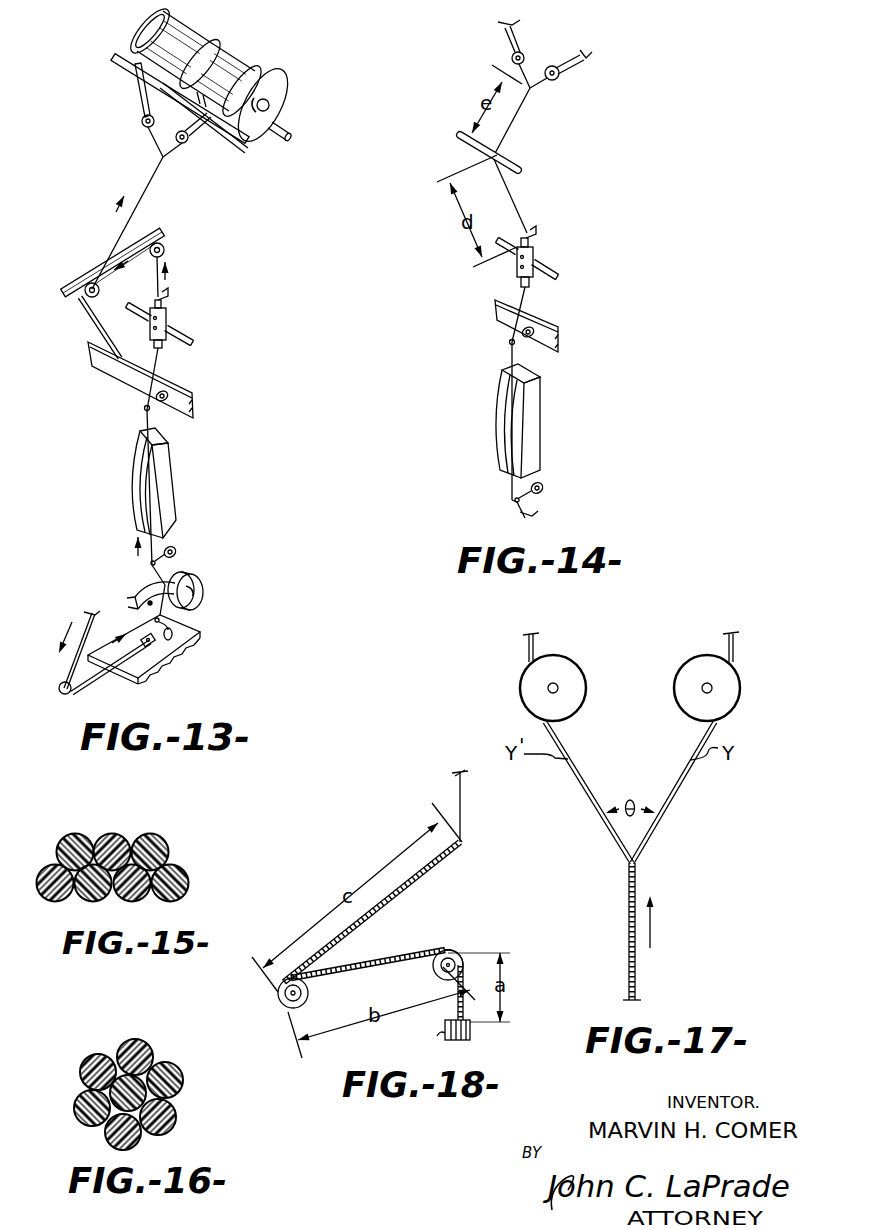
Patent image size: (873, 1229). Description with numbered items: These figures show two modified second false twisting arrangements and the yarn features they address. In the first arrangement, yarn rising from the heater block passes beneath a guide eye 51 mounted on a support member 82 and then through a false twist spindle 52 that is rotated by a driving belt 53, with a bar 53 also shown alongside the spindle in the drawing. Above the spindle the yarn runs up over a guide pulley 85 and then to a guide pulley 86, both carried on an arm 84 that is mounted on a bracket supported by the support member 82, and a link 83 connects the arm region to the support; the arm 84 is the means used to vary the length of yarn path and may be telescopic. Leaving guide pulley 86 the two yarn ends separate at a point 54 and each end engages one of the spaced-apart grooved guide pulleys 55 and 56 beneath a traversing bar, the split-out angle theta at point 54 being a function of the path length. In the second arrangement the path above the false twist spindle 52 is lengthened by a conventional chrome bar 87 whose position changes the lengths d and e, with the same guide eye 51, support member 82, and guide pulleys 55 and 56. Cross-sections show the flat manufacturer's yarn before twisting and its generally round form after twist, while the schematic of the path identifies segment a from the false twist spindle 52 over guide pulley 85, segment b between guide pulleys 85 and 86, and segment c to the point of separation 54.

In FIG. 13, the guide eye 51 is at (145, 408).
In FIG. 14, the guide eye 51 is at (510, 342).
In FIG. 13, the false twist spindle 52 is at (168, 316).
In FIG. 14, the false twist spindle 52 is at (541, 258).
In FIG. 18, the false twist spindle 52 is at (472, 1038).
In FIG. 13, the driving belt 53 is at (192, 342).
In FIG. 18, the point of separation 54 is at (463, 841).
In FIG. 13, the guide pulley 55 is at (186, 144).
In FIG. 14, the guide pulley 55 is at (557, 79).
In FIG. 17, the guide pulley 55 is at (736, 677).
In FIG. 13, the guide pulley 56 is at (143, 121).
In FIG. 14, the guide pulley 56 is at (514, 57).
In FIG. 17, the guide pulley 56 is at (522, 680).
In FIG. 13, the support member 82 is at (193, 393).
In FIG. 14, the support member 82 is at (558, 328).
In FIG. 13, the link 83 is at (90, 322).
In FIG. 13, the arm 84 is at (86, 277).
In FIG. 13, the guide pulley 85 is at (163, 246).
In FIG. 18, the guide pulley 85 is at (451, 950).
In FIG. 13, the guide pulley 86 is at (66, 296).
In FIG. 18, the guide pulley 86 is at (278, 995).
In FIG. 14, the chrome bar 87 is at (517, 163).